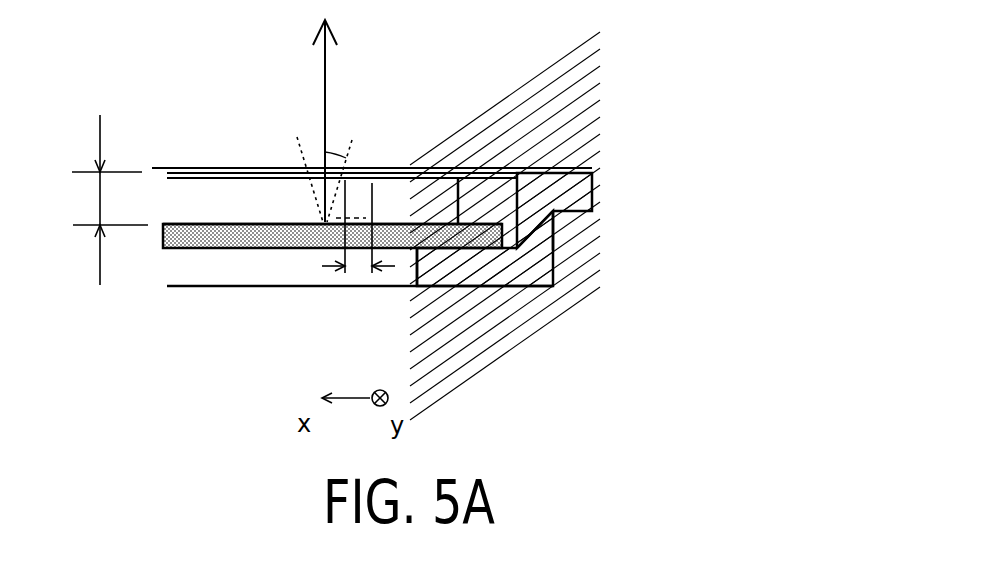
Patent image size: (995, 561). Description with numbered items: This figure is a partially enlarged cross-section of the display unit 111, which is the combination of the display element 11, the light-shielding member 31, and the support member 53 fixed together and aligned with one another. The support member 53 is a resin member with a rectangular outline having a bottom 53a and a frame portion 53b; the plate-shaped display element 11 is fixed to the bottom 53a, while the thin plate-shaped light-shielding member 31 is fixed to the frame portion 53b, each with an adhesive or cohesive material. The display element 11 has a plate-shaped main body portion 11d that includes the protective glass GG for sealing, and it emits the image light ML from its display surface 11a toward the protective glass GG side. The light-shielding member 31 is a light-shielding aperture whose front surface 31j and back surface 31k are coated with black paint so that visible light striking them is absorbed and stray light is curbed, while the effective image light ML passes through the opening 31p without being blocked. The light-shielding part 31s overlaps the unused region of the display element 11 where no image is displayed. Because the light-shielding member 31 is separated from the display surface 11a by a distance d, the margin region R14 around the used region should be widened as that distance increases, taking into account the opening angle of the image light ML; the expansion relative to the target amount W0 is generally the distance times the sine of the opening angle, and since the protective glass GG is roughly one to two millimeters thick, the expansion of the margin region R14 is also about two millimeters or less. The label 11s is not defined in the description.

The display unit 111 is at (623, 107).
The display element 11 is at (473, 195).
The upper surface of cover member 11s is at (287, 168).
The display surface 11a is at (232, 224).
The main body portion 11d is at (220, 248).
The light-shielding member 31 is at (593, 170).
The light-shielding part 31s is at (485, 168).
The front surface 31j is at (435, 168).
The opening 31p is at (362, 167).
The back surface 31k is at (390, 178).
The support member 53 is at (568, 283).
The bottom 53a is at (463, 267).
The frame portion 53b is at (540, 230).
The image light ML is at (318, 53).
The distance d is at (110, 200).
The target amount W0 is at (358, 267).
The margin region R14 is at (320, 250).
The protective glass GG is at (193, 200).